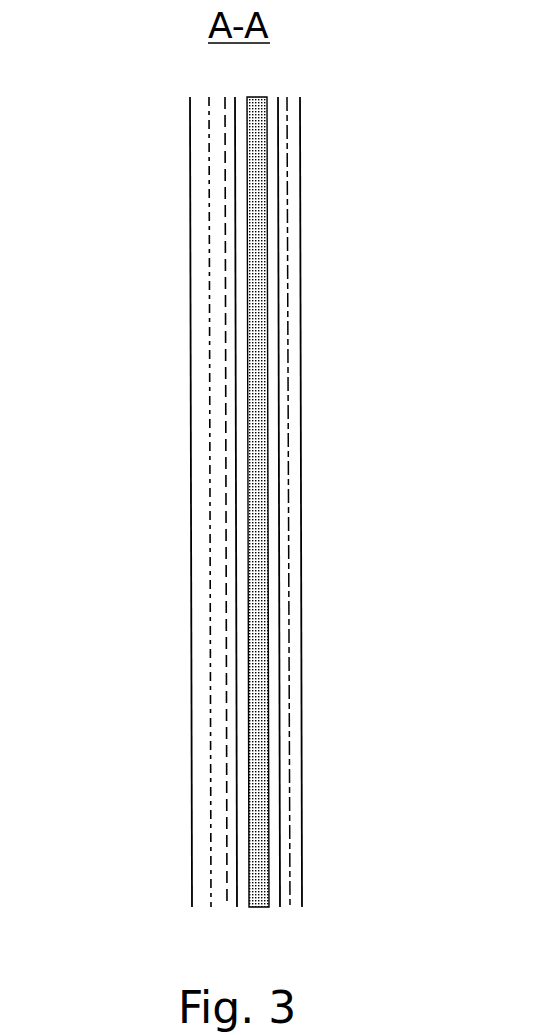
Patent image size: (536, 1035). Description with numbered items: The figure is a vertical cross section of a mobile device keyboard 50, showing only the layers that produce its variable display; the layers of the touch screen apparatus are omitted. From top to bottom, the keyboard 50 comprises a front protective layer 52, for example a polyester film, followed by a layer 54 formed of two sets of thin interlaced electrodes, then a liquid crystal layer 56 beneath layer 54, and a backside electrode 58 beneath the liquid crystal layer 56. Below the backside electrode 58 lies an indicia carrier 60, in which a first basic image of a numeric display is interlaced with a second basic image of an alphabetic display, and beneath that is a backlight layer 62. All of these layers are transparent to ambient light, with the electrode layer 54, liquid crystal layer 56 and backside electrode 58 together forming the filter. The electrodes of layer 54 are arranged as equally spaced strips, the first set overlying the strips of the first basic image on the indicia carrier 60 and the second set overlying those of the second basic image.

The keyboard 50 is at (356, 771).
The front protective layer 52 is at (303, 537).
The layer 54 is at (288, 247).
The liquid crystal layer 56 is at (255, 390).
The backside electrode 58 is at (225, 398).
The indicia carrier 60 is at (208, 290).
The backlight layer 62 is at (190, 548).